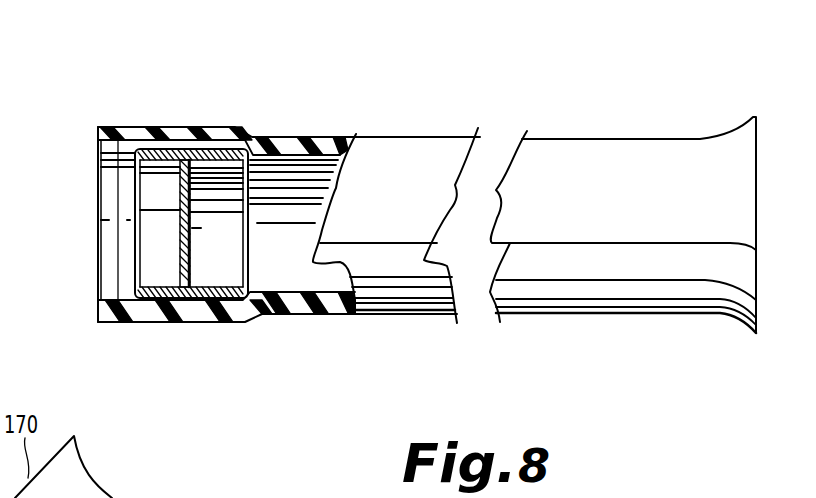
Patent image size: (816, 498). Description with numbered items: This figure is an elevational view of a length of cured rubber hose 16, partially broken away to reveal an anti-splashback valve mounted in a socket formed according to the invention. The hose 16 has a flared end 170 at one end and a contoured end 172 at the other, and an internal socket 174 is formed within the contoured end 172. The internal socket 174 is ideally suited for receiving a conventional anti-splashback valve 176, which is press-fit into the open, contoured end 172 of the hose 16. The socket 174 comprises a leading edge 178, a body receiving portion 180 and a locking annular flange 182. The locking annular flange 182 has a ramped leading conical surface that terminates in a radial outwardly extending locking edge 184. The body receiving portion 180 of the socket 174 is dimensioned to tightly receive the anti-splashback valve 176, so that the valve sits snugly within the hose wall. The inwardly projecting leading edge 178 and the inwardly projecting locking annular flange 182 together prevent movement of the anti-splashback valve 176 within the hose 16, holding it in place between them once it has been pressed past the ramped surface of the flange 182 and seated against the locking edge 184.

The cured rubber hose 16 is at (412, 137).
The flared end 170 is at (745, 122).
The contoured end 172 is at (122, 127).
The internal socket 174 is at (184, 127).
The anti-splashback valve 176 is at (180, 244).
The leading edge 178 is at (272, 137).
The body receiving portion 180 is at (204, 300).
The locking annular flange 182 is at (148, 127).
The locking edge 184 is at (117, 322).